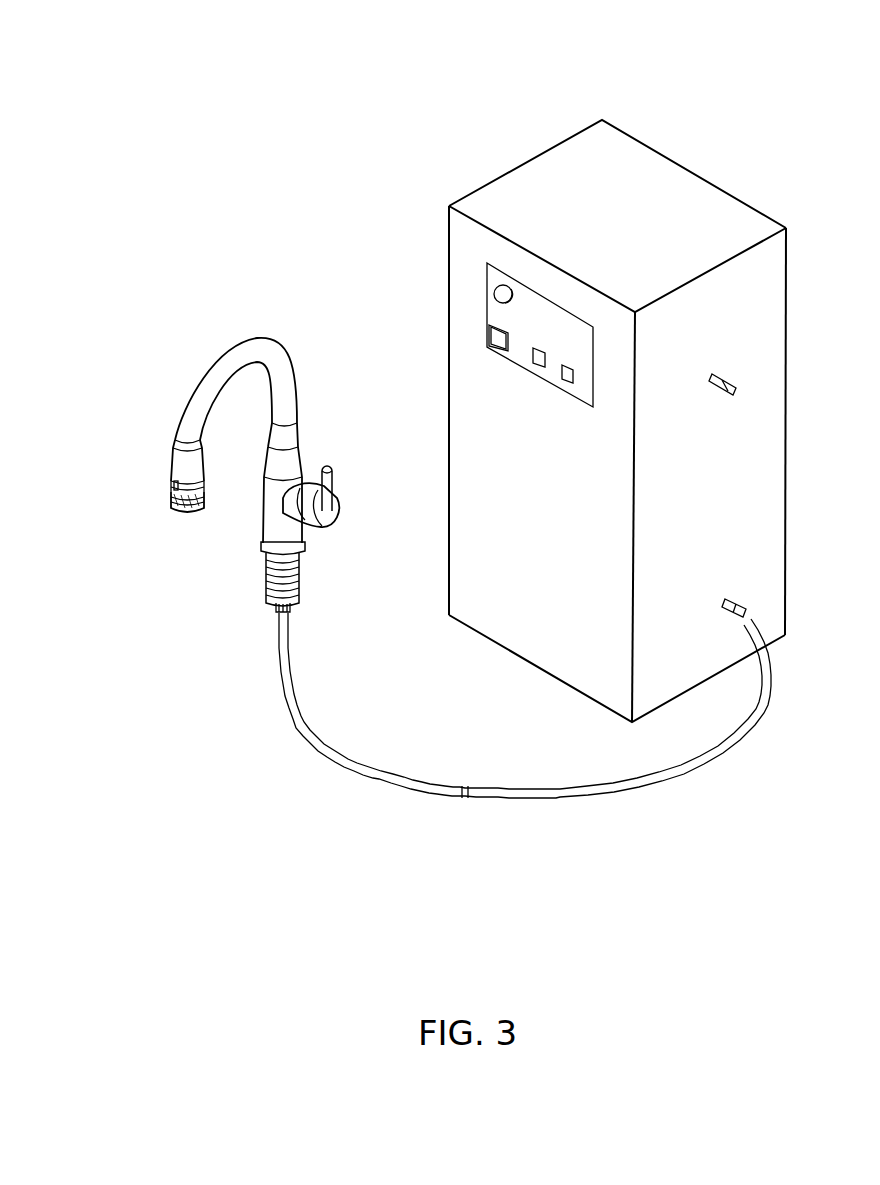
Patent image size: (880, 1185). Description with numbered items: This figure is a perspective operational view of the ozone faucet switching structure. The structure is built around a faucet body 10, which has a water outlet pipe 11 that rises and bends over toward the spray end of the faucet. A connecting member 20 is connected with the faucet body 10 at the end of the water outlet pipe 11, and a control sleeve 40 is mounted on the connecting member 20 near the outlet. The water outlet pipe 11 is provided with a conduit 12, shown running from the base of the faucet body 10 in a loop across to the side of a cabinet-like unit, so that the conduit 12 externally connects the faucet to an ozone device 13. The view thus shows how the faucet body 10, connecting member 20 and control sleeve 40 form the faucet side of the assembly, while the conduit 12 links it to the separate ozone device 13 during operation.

The faucet body 10 is at (325, 562).
The water outlet pipe 11 is at (198, 395).
The conduit 12 is at (368, 768).
The ozone device 13 is at (560, 143).
The connecting member 20 is at (160, 483).
The control sleeve 40 is at (183, 515).